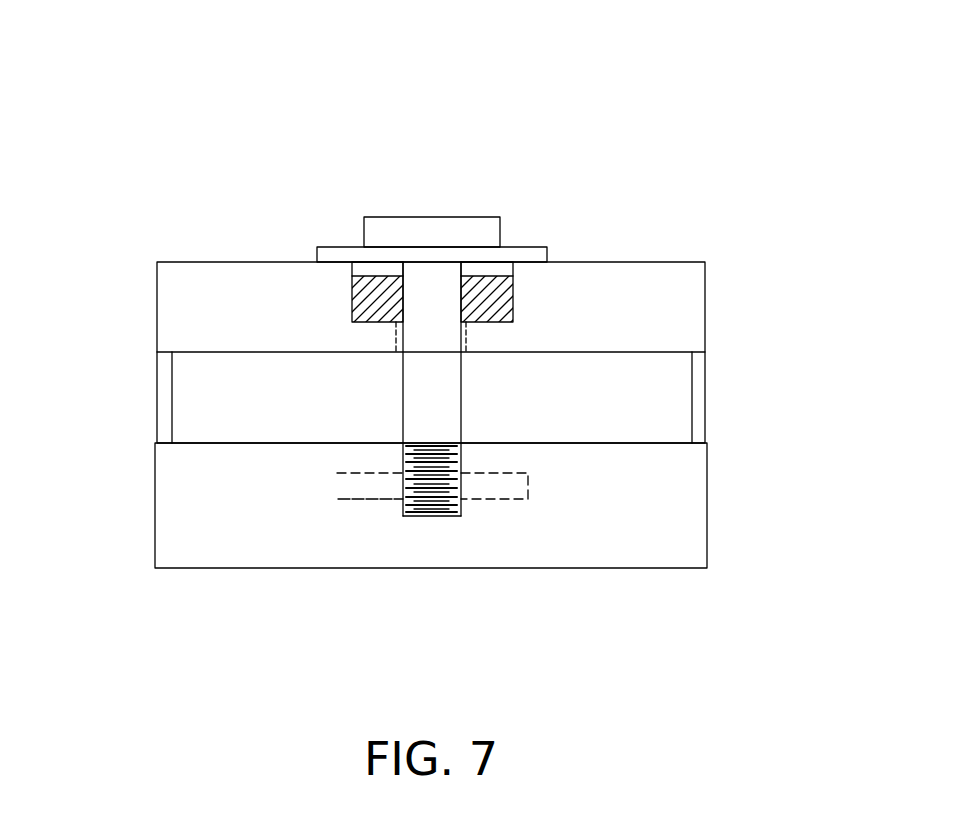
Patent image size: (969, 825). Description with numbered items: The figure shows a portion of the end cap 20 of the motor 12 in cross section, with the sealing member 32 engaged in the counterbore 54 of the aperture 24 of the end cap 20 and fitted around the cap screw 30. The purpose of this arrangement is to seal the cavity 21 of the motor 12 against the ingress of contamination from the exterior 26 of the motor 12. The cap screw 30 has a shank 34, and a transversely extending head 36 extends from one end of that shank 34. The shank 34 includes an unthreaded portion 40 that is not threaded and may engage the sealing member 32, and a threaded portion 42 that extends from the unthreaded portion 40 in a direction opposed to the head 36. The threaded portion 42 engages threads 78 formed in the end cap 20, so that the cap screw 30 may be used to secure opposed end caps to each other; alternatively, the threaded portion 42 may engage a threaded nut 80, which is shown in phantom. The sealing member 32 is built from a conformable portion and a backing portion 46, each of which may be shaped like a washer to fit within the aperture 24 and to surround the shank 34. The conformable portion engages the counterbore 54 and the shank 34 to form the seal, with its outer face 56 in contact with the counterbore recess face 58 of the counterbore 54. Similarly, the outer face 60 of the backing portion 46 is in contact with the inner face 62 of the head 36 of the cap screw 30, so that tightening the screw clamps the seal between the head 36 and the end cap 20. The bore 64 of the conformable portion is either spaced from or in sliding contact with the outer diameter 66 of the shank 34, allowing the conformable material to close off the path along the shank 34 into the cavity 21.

The motor 12 is at (630, 80).
The end cap 20 is at (182, 262).
The cavity 21 is at (651, 396).
The aperture 24 is at (484, 167).
The exterior 26 is at (413, 127).
The cap screw 30 is at (162, 139).
The sealing member 32 is at (331, 281).
The shank 34 is at (351, 292).
The head 36 is at (535, 246).
The unthreaded portion 40 is at (389, 403).
The threaded portion 42 is at (388, 456).
The backing portion 46 is at (352, 264).
The counterbore 54 is at (513, 322).
The outer face 56 is at (365, 322).
The counterbore recess face 58 is at (513, 291).
The outer face 60 is at (503, 260).
The inner face 62 is at (466, 256).
The bore 64 is at (403, 303).
The outer diameter 66 is at (397, 347).
The threads 78 is at (448, 512).
The nut 80 is at (355, 499).